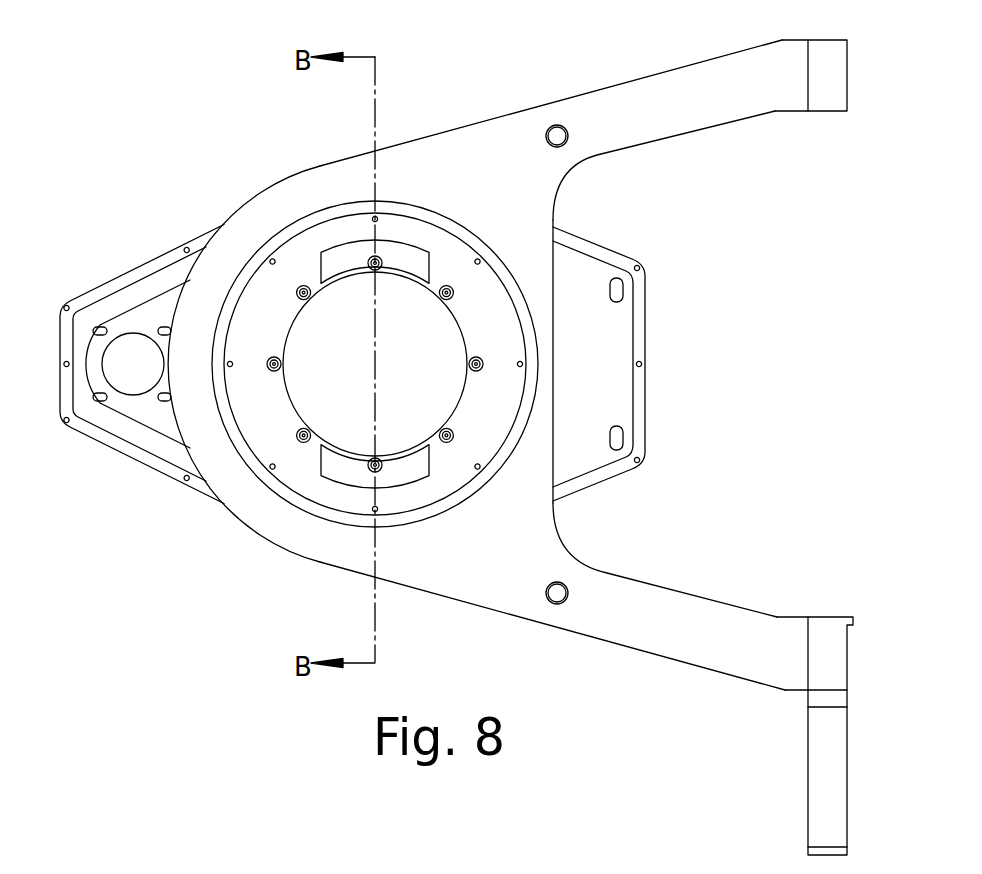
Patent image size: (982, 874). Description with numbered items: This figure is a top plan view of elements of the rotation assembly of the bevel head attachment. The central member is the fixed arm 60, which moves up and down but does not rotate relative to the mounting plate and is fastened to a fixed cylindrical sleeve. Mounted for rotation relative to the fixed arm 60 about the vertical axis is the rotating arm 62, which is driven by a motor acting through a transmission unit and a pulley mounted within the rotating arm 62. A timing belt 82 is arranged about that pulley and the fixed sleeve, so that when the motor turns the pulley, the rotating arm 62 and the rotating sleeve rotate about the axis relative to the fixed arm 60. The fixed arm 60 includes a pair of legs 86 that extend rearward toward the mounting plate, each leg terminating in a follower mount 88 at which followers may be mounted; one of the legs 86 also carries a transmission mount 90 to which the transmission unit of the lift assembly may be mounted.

The fixed arm 60 is at (256, 541).
The rotating arm 62 is at (653, 320).
The timing belt 82 is at (148, 301).
The legs 86 is at (713, 57).
The follower mount 88 is at (847, 75).
The transmission mount 90 is at (808, 777).